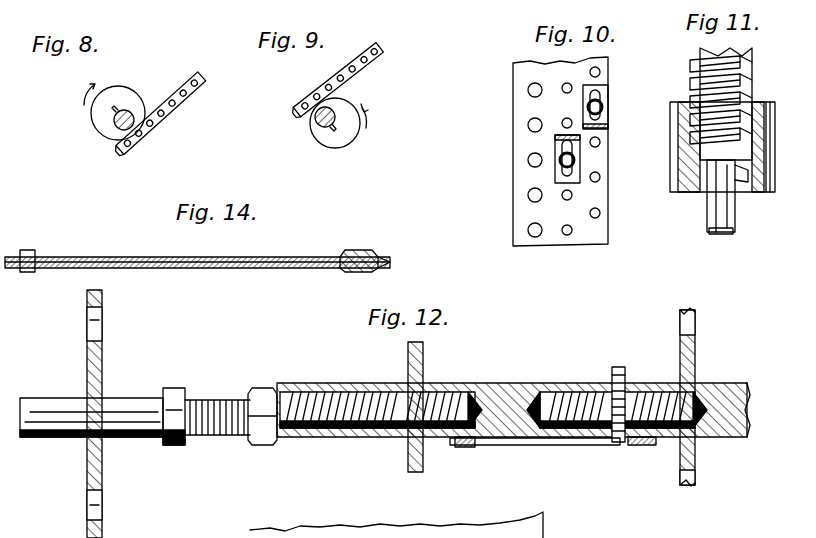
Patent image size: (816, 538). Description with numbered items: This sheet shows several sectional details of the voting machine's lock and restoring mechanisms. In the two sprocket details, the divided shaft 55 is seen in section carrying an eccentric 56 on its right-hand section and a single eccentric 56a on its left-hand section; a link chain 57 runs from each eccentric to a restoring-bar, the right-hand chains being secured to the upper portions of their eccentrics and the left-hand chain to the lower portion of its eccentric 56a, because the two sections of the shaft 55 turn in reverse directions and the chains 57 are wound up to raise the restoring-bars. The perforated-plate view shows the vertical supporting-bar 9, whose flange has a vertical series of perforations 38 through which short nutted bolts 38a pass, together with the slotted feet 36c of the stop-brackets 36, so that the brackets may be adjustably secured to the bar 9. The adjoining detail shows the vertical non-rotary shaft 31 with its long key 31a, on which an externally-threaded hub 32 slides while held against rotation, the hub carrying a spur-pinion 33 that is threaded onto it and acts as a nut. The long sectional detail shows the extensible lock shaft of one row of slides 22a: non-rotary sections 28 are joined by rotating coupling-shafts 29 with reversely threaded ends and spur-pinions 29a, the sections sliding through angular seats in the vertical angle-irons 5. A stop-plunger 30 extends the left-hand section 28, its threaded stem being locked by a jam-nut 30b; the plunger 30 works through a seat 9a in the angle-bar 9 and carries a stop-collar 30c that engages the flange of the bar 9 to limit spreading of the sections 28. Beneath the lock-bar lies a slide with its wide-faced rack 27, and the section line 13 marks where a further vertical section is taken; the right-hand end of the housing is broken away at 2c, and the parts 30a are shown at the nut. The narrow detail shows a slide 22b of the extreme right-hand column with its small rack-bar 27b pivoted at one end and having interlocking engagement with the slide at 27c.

In FIG. 12, the tube end 2c is at (720, 383).
In FIG. 12, the vertical angle-iron 5 is at (424, 370).
In FIG. 10, the supporting-bar 9 is at (513, 191).
In FIG. 12, the supporting-bar 9 is at (88, 462).
In FIG. 12, the seats 9a is at (90, 336).
In FIG. 12, the section line 13 is at (514, 352).
In FIG. 12, the actuating slides 22a is at (462, 448).
In FIG. 14, the actuating slides 22b is at (335, 268).
In FIG. 12, the racks 27 is at (505, 445).
In FIG. 14, the rack-bar 27b is at (78, 257).
In FIG. 14, the interlocking engagement 27c is at (27, 272).
In FIG. 12, the non-rotary sections 28 is at (340, 440).
In FIG. 12, the coupling-shafts 29 is at (575, 390).
In FIG. 12, the spur-pinions 29a is at (619, 445).
In FIG. 12, the stop-plunger 30 is at (122, 405).
In FIG. 12, the nut 30a is at (262, 386).
In FIG. 12, the jam-nuts 30b is at (340, 383).
In FIG. 12, the stop-collars 30c is at (175, 448).
In FIG. 11, the non-rotary shaft 31 is at (740, 224).
In FIG. 11, the key 31a is at (712, 234).
In FIG. 11, the externally-threaded hubs 32 is at (748, 76).
In FIG. 11, the spur-pinion 33 is at (686, 192).
In FIG. 10, the stop-brackets 36 is at (606, 100).
In FIG. 10, the slotted feet 36c is at (572, 171).
In FIG. 10, the perforations 38 is at (567, 200).
In FIG. 10, the nutted bolts 38a is at (563, 154).
In FIG. 8, the divided shaft 55 is at (120, 126).
In FIG. 9, the divided shaft 55 is at (320, 122).
In FIG. 9, the eccentrics 56 is at (348, 110).
In FIG. 8, the eccentric 56a is at (136, 105).
In FIG. 8, the link chains 57 is at (172, 102).
In FIG. 9, the link chains 57 is at (315, 92).